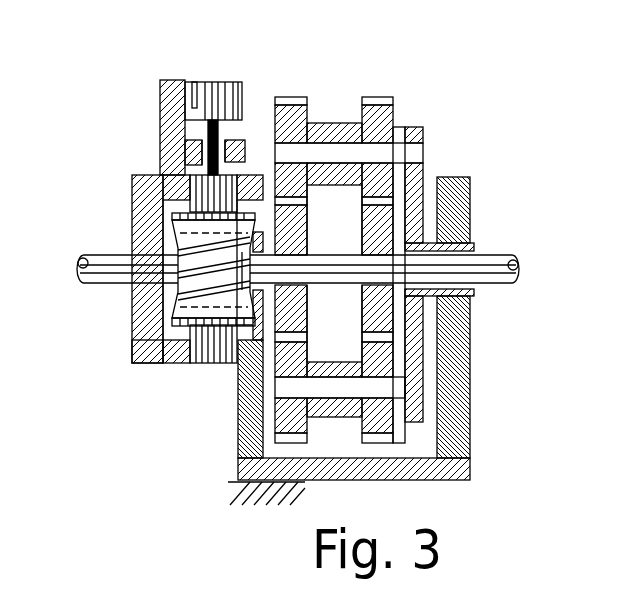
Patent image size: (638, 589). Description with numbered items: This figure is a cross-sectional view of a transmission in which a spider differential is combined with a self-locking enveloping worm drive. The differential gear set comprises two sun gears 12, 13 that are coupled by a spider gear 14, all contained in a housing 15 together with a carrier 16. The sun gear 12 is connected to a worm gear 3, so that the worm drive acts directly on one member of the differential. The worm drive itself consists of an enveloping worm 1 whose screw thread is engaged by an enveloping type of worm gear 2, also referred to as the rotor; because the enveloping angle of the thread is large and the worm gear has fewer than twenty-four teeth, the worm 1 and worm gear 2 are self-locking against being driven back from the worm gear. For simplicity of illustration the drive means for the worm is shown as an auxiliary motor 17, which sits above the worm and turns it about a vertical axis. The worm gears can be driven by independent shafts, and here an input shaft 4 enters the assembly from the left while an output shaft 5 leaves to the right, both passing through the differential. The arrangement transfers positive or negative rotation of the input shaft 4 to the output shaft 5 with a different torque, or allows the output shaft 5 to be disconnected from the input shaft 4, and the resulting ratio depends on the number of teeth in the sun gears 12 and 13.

The enveloping worm 1 is at (188, 262).
The worm gear 2 is at (248, 302).
The worm gear 3 is at (131, 363).
The input shaft 4 is at (118, 273).
The output shaft 5 is at (493, 286).
The sun gear 12 is at (294, 192).
The sun gear 13 is at (387, 205).
The spider gear 14 is at (310, 128).
The housing 15 is at (393, 470).
The carrier 16 is at (424, 165).
The auxiliary motor 17 is at (190, 103).